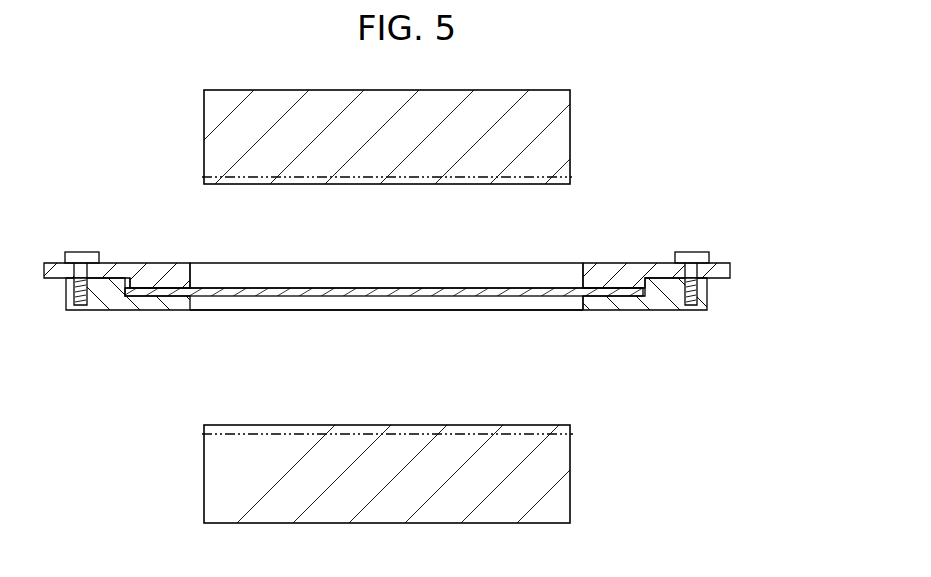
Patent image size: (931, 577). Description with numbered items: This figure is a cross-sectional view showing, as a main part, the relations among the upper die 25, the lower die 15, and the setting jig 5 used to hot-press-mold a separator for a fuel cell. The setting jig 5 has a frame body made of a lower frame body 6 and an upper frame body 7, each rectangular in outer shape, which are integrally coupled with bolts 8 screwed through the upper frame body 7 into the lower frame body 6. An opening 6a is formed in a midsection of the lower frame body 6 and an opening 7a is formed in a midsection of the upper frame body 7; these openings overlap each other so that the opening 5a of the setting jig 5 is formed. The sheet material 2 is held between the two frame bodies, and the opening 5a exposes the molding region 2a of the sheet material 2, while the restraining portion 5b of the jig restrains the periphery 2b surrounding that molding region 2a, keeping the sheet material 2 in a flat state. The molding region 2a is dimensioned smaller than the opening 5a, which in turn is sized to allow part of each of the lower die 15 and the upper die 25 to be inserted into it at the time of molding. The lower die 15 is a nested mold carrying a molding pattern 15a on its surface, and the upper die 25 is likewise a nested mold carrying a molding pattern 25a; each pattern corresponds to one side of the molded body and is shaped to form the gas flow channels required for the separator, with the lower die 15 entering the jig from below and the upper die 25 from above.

The sheet material 2 is at (413, 290).
The molding region 2a is at (330, 287).
The periphery 2b is at (187, 282).
The setting jig 5 is at (465, 280).
The opening 5a is at (262, 280).
The restraining portion 5b is at (620, 306).
The lower frame body 6 is at (705, 298).
The opening 6a is at (455, 302).
The upper frame body 7 is at (727, 271).
The opening 7a is at (453, 276).
The bolt 8 is at (83, 252).
The lower die 15 is at (560, 495).
The molding pattern 15a is at (274, 432).
The upper die 25 is at (560, 120).
The molding pattern 25a is at (512, 183).